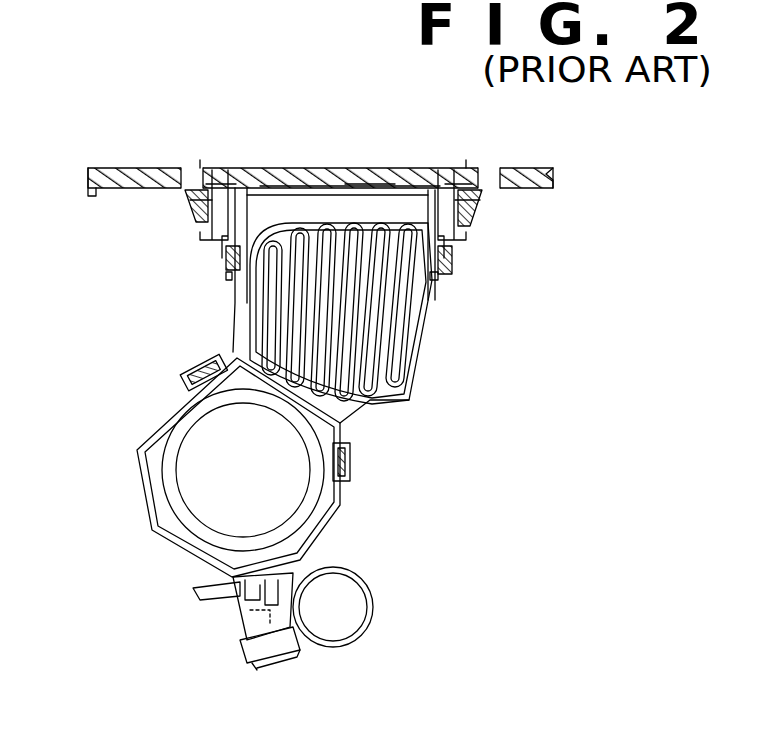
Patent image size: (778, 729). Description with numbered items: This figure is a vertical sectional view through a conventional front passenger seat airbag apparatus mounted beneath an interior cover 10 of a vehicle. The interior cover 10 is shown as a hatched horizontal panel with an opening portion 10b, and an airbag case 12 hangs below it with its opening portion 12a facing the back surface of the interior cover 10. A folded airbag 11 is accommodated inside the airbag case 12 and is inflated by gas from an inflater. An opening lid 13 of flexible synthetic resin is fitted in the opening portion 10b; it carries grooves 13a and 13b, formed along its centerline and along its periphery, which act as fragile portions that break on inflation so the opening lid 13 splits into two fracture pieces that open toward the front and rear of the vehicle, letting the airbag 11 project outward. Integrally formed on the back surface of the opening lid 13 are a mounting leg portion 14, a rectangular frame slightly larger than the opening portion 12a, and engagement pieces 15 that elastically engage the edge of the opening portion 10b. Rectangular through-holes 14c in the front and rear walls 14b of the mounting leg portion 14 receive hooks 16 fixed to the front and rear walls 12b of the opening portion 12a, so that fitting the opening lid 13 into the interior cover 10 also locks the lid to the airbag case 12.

The interior cover 10 is at (88, 168).
The opening portion 10b is at (185, 176).
The airbag 11 is at (348, 348).
The airbag case 12 is at (386, 342).
The opening portion 12a is at (430, 222).
The front and rear walls 12b is at (233, 338).
The opening lid 13 is at (290, 166).
The groove 13a is at (378, 178).
The grooves 13b is at (260, 178).
The mounting leg portion 14 is at (238, 297).
The front and rear walls 14b is at (214, 236).
The rectangular through-holes 14c is at (222, 250).
The engagement pieces 15 is at (190, 200).
The hooks 16 is at (228, 272).